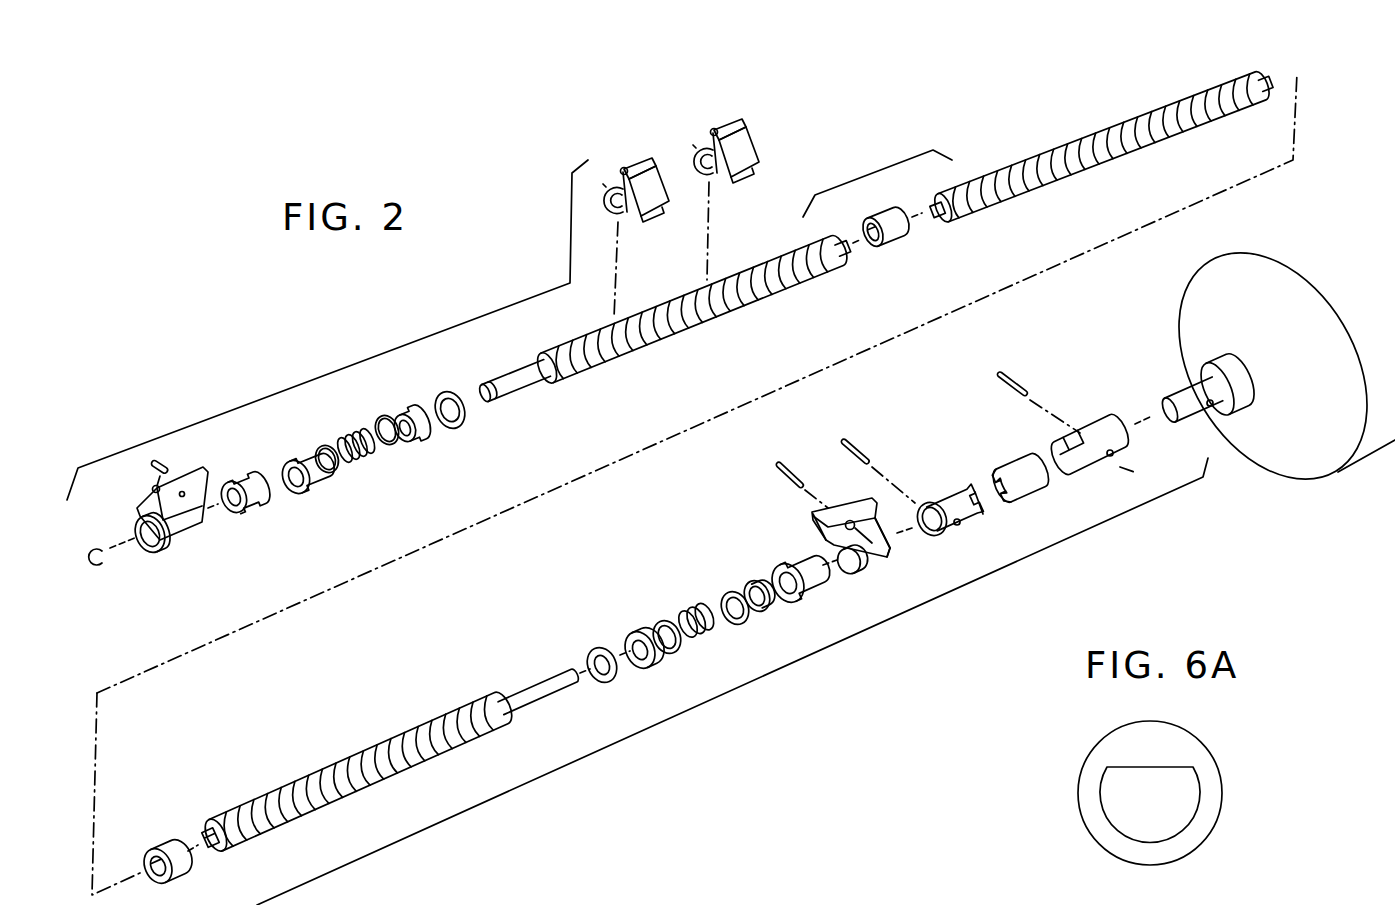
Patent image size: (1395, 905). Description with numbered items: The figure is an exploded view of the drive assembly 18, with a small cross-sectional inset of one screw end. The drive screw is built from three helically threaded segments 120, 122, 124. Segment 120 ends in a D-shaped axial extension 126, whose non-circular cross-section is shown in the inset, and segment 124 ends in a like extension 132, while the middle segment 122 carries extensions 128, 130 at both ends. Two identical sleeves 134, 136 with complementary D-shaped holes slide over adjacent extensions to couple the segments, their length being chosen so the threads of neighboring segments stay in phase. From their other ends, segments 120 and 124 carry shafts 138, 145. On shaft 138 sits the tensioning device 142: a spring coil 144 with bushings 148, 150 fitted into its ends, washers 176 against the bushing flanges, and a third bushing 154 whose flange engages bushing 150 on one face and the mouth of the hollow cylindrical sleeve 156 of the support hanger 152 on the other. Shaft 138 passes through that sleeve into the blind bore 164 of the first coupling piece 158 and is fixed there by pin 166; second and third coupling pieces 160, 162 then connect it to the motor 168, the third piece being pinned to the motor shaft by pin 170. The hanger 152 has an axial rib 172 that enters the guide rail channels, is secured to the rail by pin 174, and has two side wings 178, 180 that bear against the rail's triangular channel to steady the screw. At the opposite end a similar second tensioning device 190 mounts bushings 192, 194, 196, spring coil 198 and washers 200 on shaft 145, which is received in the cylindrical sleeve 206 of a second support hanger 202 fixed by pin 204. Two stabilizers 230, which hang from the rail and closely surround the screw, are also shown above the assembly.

In FIG. 2, the drive assembly 18 is at (503, 306).
In FIG. 2, the screw segment 120 is at (348, 762).
In FIG. 6A, the screw segment 120 is at (1207, 752).
In FIG. 2, the screw segment 122 is at (1107, 160).
In FIG. 2, the screw segment 124 is at (676, 341).
In FIG. 2, the axial extension 126 is at (205, 835).
In FIG. 6A, the axial extension 126 is at (1200, 792).
In FIG. 2, the axial extension 128 is at (938, 218).
In FIG. 2, the axial extension 130 is at (1271, 90).
In FIG. 2, the axial extension 132 is at (850, 255).
In FIG. 2, the sleeve 134 is at (175, 874).
In FIG. 2, the sleeve 136 is at (882, 213).
In FIG. 2, the shaft 138 is at (520, 683).
In FIG. 2, the tensioning device 142 is at (716, 526).
In FIG. 2, the spring coil 144 is at (690, 607).
In FIG. 2, the shaft 145 is at (512, 373).
In FIG. 2, the bushing 148 is at (630, 640).
In FIG. 2, the bushing 150 is at (757, 582).
In FIG. 2, the support hanger 152 is at (886, 556).
In FIG. 2, the bushing 154 is at (815, 590).
In FIG. 2, the cylindrical sleeve 156 is at (857, 573).
In FIG. 2, the first coupling piece 158 is at (980, 517).
In FIG. 2, the second coupling piece 160 is at (1040, 492).
In FIG. 2, the third coupling piece 162 is at (1127, 452).
In FIG. 2, the blind bore 164 is at (933, 508).
In FIG. 2, the pin 166 is at (845, 451).
In FIG. 2, the motor 168 is at (1363, 447).
In FIG. 2, the pin 170 is at (1020, 385).
In FIG. 2, the rib 172 is at (850, 510).
In FIG. 2, the pin 174 is at (786, 479).
In FIG. 2, the washer 176 is at (608, 678).
In FIG. 2, the side wing 178 is at (810, 512).
In FIG. 2, the side wing 180 is at (892, 546).
In FIG. 2, the second tensioning device 190 is at (374, 408).
In FIG. 2, the bushing 192 is at (417, 410).
In FIG. 2, the bushing 194 is at (288, 470).
In FIG. 2, the bushing 196 is at (253, 508).
In FIG. 2, the spring coil 198 is at (360, 433).
In FIG. 2, the washer 200 is at (456, 430).
In FIG. 2, the support hanger 202 is at (175, 550).
In FIG. 2, the pin 204 is at (156, 472).
In FIG. 2, the cylindrical sleeve 206 is at (140, 532).
In FIG. 2, the stabilizer 230 is at (681, 203).